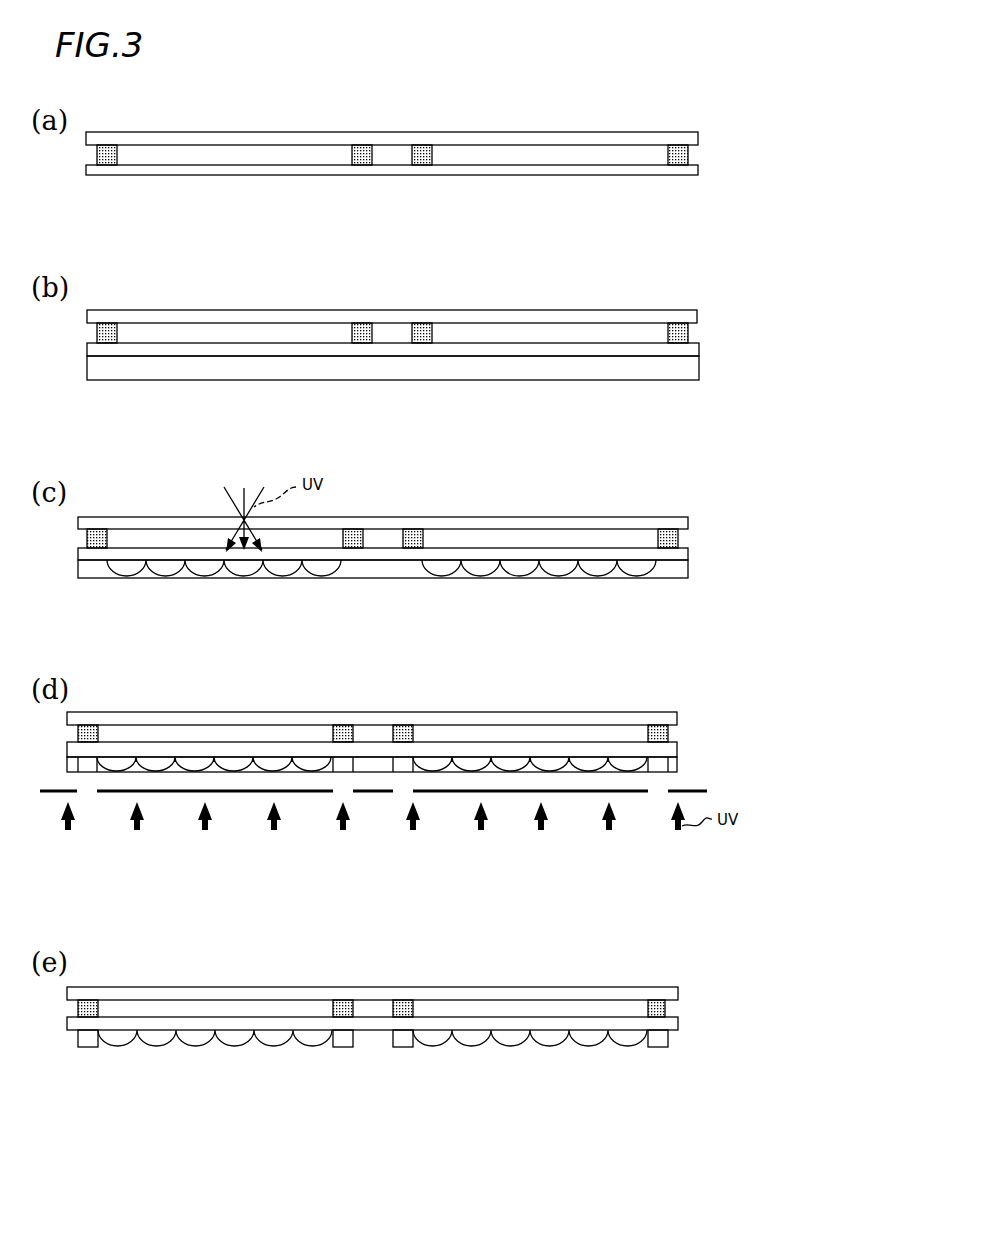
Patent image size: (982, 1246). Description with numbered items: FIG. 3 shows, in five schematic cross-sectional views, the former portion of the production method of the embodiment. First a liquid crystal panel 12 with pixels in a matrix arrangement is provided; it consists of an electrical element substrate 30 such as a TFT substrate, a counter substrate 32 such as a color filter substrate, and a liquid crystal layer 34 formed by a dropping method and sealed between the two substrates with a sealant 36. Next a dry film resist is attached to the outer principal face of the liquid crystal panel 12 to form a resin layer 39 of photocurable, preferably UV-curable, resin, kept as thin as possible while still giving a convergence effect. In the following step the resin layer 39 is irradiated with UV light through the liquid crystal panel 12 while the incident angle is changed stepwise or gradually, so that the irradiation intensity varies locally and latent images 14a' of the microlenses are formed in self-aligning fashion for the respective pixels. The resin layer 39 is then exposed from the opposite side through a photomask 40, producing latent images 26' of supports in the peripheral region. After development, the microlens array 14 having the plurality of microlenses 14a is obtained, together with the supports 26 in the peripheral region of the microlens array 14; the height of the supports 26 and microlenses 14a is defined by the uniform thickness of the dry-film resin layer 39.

The liquid crystal panel 12 is at (437, 577).
The electrical element substrate 30 is at (698, 170).
The counter substrate 32 is at (698, 138).
The liquid crystal layer 34 is at (672, 153).
The sealant 36 is at (423, 166).
The resin layer 39 is at (696, 370).
The photomask 40 is at (690, 790).
The latent images of microlenses 14a' is at (376, 712).
The microlenses 14a is at (372, 1058).
The microlens array 14 is at (373, 1066).
The latent images of supports 26' is at (389, 814).
The supports 26 is at (373, 1066).